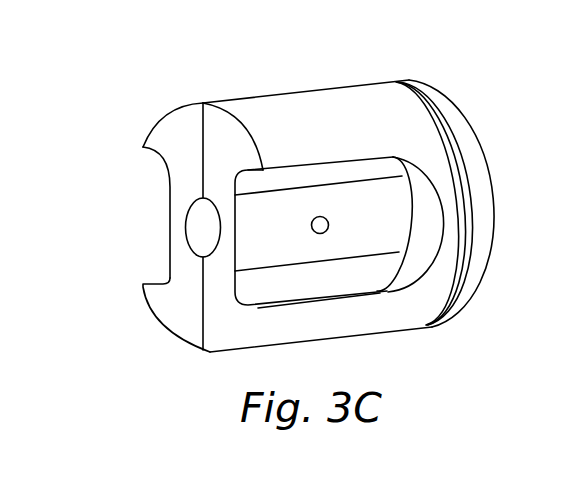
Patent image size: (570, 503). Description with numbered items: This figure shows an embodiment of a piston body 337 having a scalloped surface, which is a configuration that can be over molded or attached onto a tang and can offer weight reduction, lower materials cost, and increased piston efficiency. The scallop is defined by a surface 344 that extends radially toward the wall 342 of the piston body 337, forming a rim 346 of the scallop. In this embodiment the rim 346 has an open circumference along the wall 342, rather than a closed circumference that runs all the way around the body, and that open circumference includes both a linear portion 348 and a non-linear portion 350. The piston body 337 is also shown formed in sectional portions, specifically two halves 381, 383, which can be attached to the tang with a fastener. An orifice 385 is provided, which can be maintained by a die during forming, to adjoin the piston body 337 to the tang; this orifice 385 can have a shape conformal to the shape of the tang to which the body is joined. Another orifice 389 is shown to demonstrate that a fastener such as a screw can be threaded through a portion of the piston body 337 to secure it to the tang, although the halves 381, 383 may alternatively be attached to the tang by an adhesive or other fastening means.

The piston body 337 is at (170, 60).
The wall 342 is at (386, 98).
The surface 344 is at (427, 222).
The rim 346 is at (338, 296).
The linear portion 348 is at (322, 216).
The non-linear portion 350 is at (451, 221).
The half 381 is at (166, 326).
The half 383 is at (217, 325).
The orifice 385 is at (203, 228).
The orifice 389 is at (328, 222).